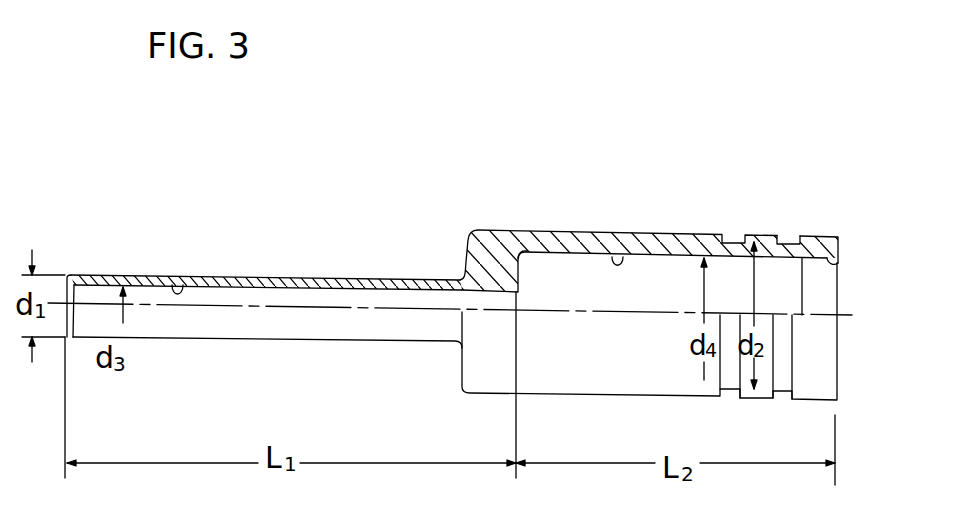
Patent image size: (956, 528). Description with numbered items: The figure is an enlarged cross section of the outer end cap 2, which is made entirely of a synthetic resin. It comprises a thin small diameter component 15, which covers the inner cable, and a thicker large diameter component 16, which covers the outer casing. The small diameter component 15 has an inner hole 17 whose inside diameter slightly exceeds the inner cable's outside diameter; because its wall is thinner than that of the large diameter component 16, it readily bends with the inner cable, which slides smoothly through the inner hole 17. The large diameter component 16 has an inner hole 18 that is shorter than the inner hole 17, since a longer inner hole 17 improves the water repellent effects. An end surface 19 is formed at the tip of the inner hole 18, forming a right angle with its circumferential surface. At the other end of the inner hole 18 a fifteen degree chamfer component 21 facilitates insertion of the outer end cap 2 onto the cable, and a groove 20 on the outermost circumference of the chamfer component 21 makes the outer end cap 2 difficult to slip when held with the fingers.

The outer end cap 2 is at (366, 258).
The small diameter component 15 is at (193, 327).
The large diameter component 16 is at (598, 377).
The inner hole of the small diameter component 17 is at (188, 277).
The inner hole of the large diameter component 18 is at (621, 255).
The end surface 19 is at (536, 249).
The groove 20 is at (788, 236).
The chamfer component 21 is at (838, 262).